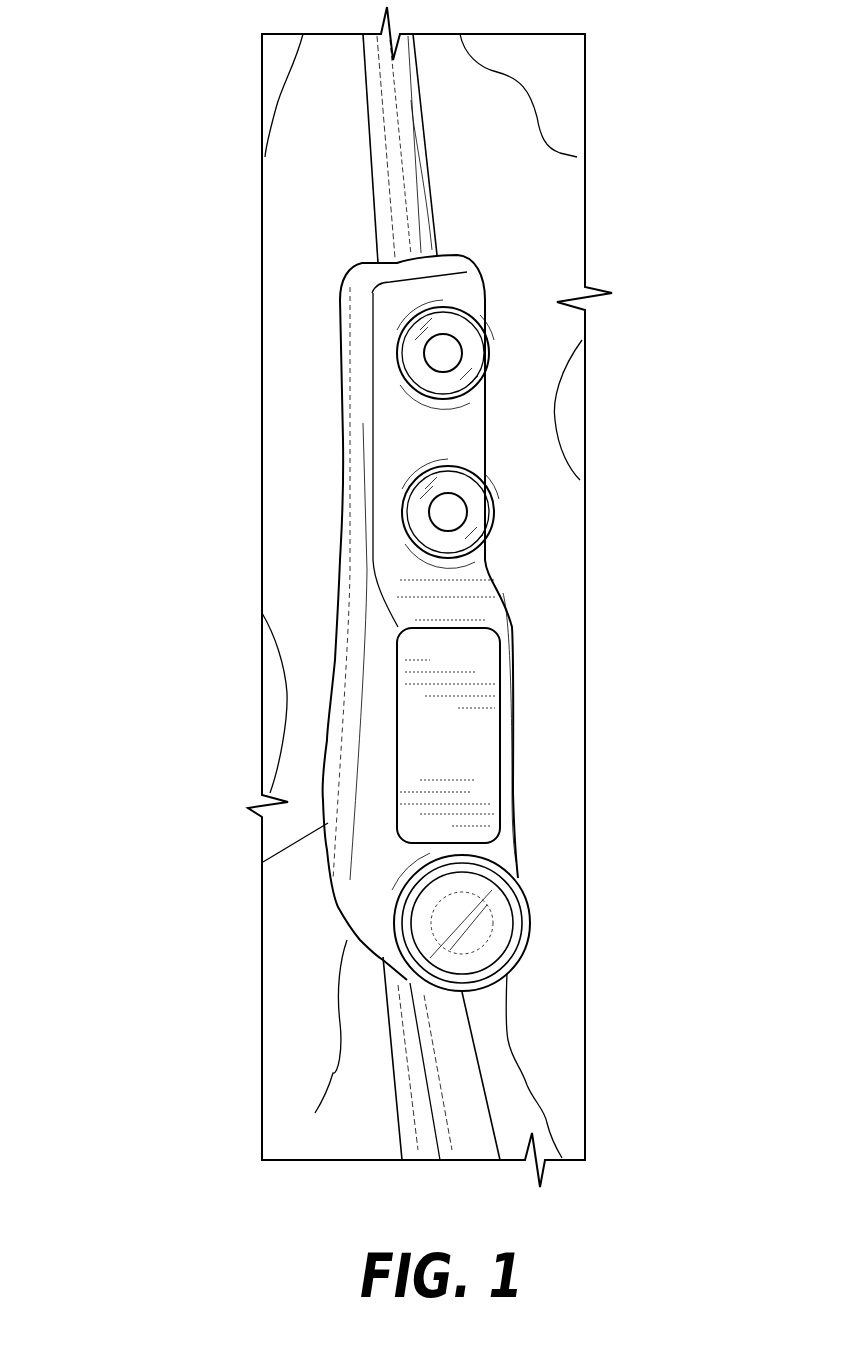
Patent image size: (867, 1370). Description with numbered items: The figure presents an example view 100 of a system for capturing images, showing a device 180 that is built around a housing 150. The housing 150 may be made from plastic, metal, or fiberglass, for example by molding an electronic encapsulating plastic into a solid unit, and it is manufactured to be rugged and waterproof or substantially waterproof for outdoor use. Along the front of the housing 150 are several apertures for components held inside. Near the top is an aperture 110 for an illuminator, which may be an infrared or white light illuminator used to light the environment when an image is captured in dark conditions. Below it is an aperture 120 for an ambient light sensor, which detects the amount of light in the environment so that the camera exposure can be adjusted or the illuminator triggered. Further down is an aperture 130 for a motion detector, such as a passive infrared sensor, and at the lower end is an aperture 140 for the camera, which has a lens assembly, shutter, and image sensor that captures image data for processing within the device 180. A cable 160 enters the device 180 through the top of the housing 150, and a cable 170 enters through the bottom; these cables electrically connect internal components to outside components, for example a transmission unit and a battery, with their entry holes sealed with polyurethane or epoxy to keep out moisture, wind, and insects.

The view 100 is at (83, 90).
The aperture for an illuminator 110 is at (493, 352).
The aperture for an ambient light sensor 120 is at (498, 508).
The aperture for a motion detector 130 is at (500, 725).
The aperture for a camera 140 is at (528, 908).
The housing 150 is at (360, 660).
The cable 160 is at (403, 155).
The cable 170 is at (455, 1060).
The device 180 is at (342, 488).